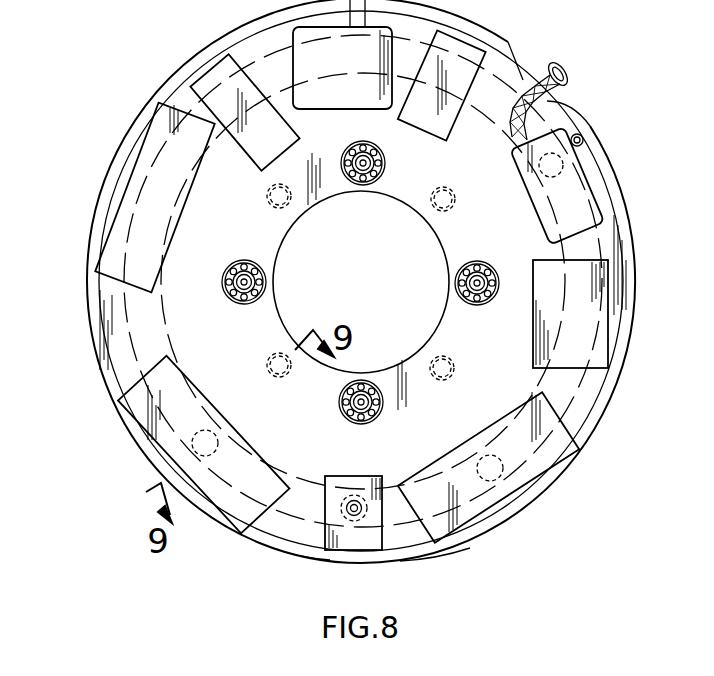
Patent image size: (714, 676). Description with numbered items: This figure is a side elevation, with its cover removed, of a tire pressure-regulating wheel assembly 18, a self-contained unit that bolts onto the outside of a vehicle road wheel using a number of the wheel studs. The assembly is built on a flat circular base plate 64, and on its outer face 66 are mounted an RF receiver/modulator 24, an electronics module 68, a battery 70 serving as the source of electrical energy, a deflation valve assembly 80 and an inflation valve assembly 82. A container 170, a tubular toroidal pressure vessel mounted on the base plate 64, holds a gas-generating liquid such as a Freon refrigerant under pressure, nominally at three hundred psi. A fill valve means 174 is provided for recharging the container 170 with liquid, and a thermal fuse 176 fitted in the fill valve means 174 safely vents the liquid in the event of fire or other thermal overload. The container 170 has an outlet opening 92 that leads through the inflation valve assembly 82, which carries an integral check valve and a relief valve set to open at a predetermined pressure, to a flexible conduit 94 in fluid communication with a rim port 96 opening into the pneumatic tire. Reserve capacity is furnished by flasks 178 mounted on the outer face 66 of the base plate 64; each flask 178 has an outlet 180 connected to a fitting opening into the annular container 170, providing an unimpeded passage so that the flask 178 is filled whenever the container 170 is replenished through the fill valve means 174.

The tire pressure-regulating wheel assembly 18 is at (86, 326).
The RF receiver/modulator 24 is at (447, 142).
The base plate 64 is at (283, 552).
The outer face 66 is at (425, 553).
The electronics module 68 is at (214, 72).
The battery 70 is at (533, 340).
The deflation valve assembly 80 is at (354, 110).
The inflation valve assembly 82 is at (538, 218).
The outlet opening 92 is at (558, 176).
The flexible conduit 94 is at (538, 88).
The rim port 96 is at (566, 72).
The container 170 is at (165, 318).
The fill valve means 174 is at (340, 476).
The thermal fuse 176 is at (360, 495).
The flask 178 is at (236, 432).
The outlet 180 is at (212, 455).